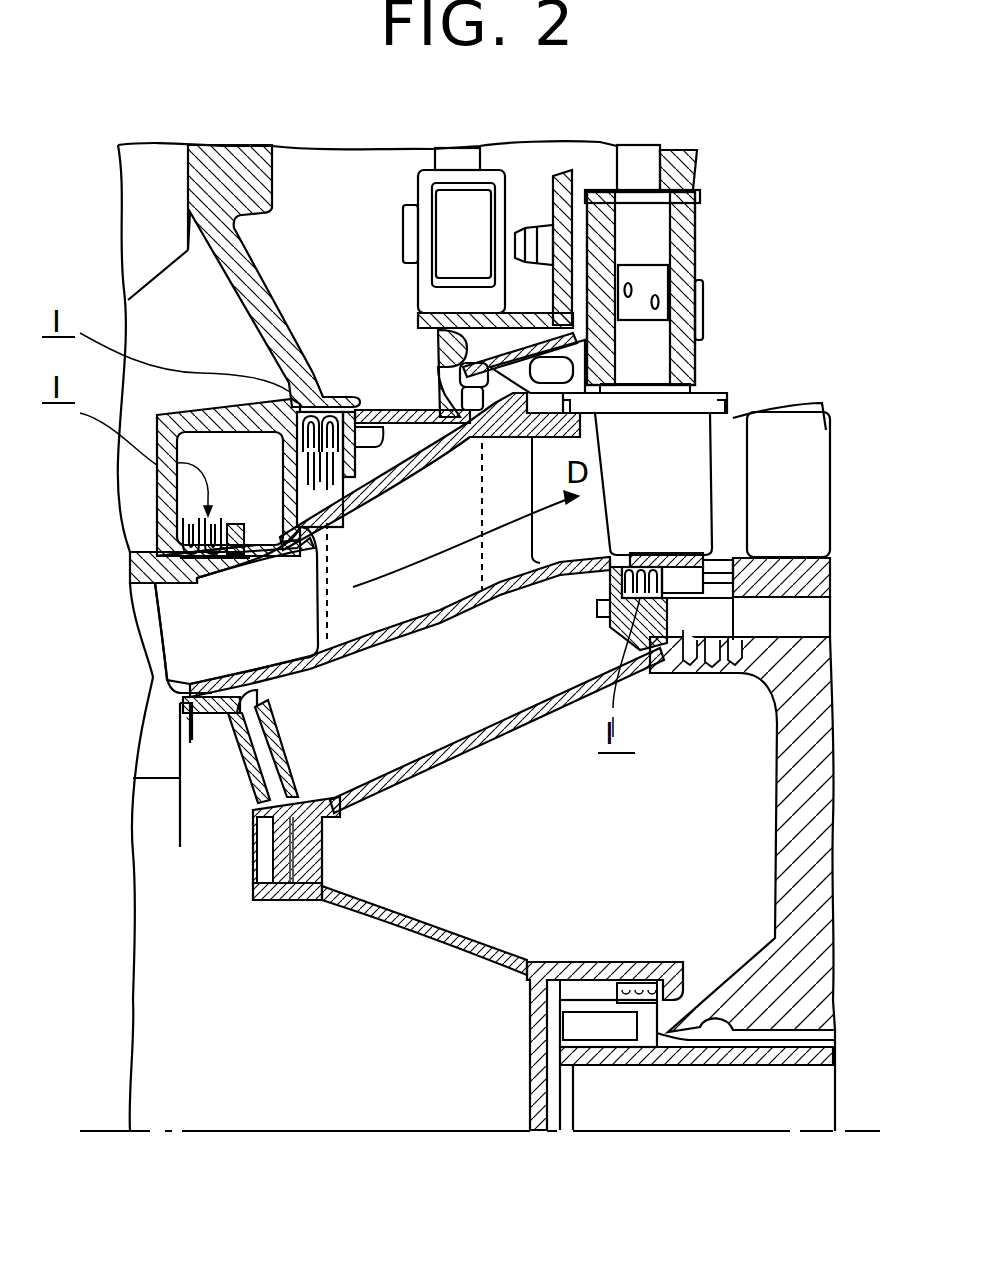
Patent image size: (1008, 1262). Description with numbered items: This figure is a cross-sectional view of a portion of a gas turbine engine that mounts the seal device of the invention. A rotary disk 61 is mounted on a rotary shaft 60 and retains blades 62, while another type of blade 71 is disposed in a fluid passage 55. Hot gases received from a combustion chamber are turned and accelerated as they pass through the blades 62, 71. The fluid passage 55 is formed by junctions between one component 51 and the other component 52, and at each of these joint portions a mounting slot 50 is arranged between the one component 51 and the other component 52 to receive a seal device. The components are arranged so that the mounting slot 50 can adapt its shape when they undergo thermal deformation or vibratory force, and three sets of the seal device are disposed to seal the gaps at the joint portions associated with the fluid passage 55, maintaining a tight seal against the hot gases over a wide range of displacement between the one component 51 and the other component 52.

The mounting slot 50 is at (297, 462).
The one component 51 is at (320, 393).
The other component 52 is at (383, 420).
The fluid passage 55 is at (257, 634).
The rotary shaft 60 is at (757, 1065).
The rotary disk 61 is at (797, 820).
The blades 62 is at (783, 498).
The blade 71 is at (687, 388).